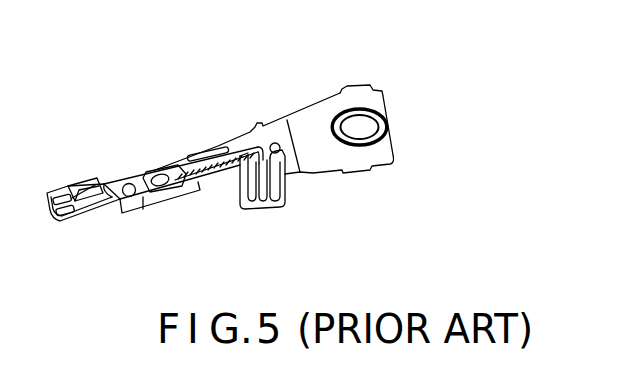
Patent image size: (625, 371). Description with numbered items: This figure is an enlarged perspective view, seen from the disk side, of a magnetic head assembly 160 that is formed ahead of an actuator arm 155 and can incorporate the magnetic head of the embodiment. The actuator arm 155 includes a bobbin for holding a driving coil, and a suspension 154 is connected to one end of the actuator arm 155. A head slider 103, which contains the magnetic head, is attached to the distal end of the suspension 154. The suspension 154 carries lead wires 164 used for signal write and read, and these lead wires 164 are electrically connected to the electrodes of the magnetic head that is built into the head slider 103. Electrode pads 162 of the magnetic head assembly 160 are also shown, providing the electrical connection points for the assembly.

The magnetic head assembly 160 is at (143, 108).
The head slider 103 is at (82, 179).
The suspension 154 is at (181, 161).
The lead wires 164 is at (144, 206).
The actuator arm 155 is at (342, 156).
The electrode pads 162 is at (267, 210).